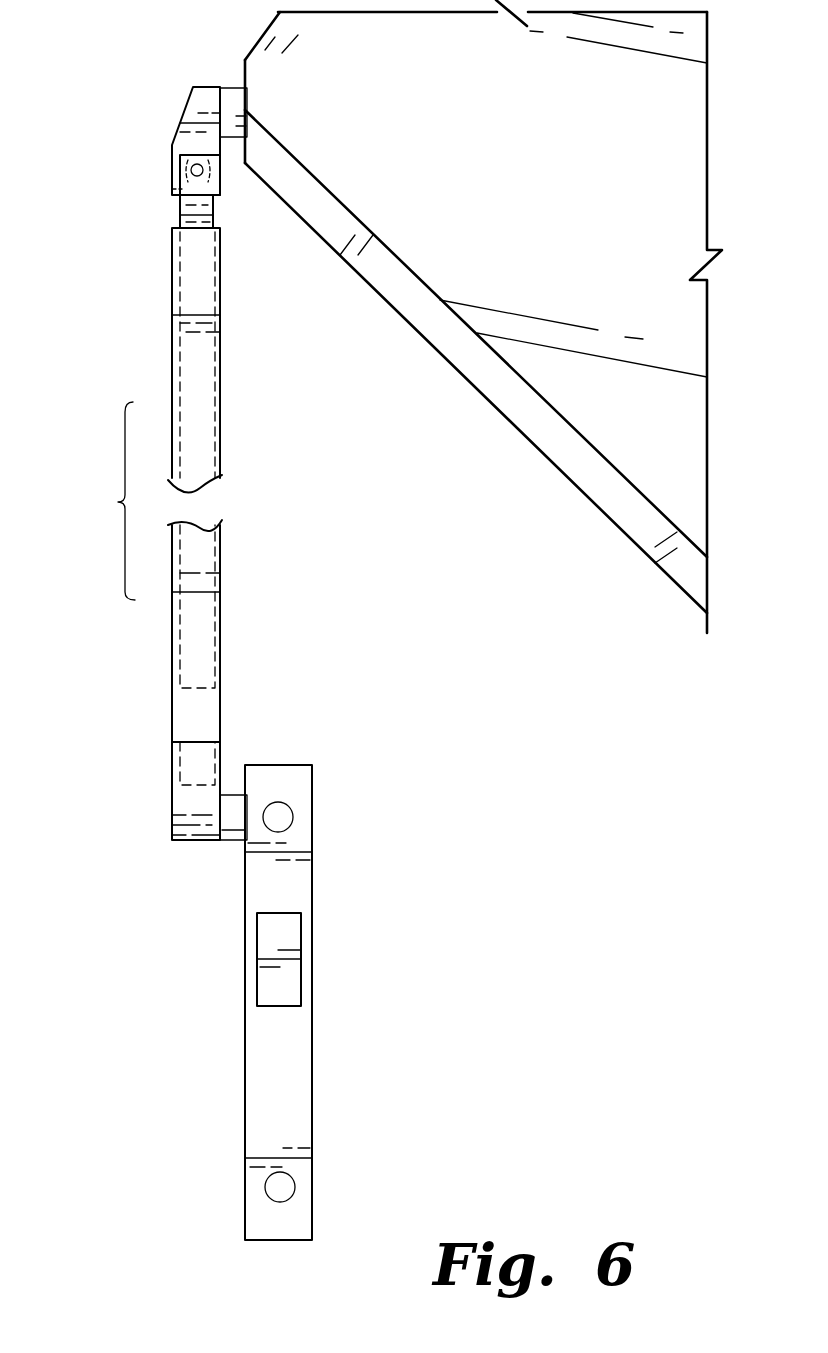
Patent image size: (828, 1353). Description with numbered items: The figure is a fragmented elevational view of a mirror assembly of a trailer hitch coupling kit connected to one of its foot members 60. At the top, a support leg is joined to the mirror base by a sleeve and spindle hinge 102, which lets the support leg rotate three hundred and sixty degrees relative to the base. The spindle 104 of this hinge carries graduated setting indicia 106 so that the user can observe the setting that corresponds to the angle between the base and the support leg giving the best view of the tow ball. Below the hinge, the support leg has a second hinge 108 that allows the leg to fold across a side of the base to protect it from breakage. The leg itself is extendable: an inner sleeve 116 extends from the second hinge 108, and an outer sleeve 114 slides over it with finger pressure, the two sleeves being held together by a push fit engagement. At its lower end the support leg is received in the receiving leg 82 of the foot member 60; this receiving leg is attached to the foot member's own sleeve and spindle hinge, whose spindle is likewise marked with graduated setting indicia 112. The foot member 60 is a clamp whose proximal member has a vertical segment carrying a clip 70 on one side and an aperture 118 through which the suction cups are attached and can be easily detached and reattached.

The foot member 60 is at (258, 1070).
The clip 70 is at (293, 970).
The receiving leg 82 is at (172, 795).
The sleeve and spindle hinge 102 is at (244, 69).
The spindle 104 is at (232, 137).
The graduated setting indicia 106 is at (243, 122).
The second hinge 108 is at (172, 186).
The graduated setting indicia 112 is at (238, 841).
The outer sleeve 114 is at (172, 298).
The inner sleeve 116 is at (180, 218).
The aperture 118 is at (284, 812).